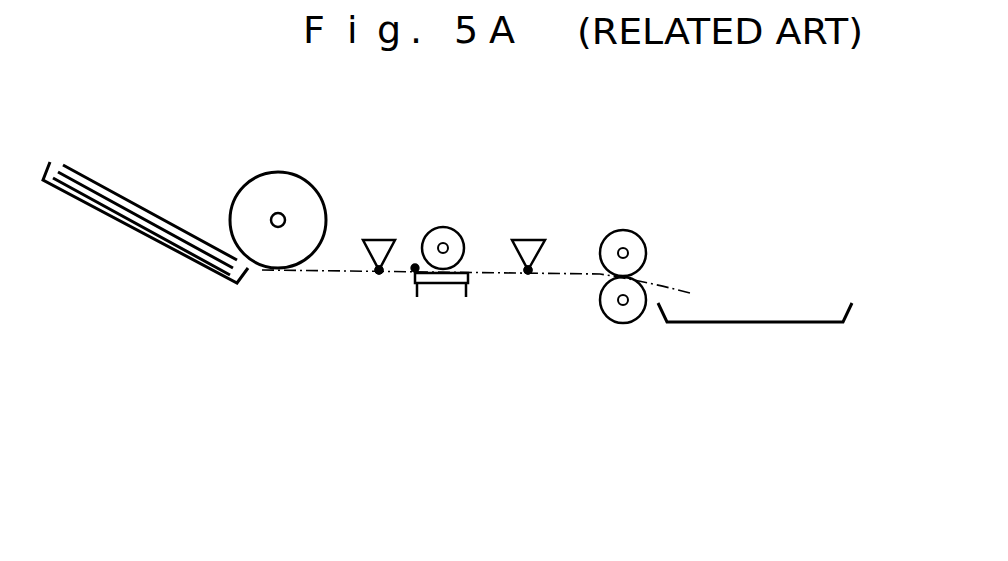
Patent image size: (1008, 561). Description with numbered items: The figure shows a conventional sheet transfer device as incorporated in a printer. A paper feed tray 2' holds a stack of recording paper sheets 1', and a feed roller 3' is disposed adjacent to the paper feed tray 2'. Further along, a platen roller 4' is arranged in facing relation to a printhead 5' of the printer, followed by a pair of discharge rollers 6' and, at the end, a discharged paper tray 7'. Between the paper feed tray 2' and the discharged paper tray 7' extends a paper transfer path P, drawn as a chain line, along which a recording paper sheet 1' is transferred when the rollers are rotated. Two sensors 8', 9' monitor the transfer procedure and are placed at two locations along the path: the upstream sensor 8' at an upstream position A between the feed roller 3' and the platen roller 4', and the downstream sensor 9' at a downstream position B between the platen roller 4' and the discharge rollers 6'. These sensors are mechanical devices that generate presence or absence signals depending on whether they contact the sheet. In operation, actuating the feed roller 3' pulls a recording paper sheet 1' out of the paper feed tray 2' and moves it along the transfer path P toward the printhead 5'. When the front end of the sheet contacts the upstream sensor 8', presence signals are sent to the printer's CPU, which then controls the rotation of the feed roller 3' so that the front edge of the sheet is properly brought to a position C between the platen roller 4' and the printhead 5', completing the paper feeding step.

The recording paper sheets 1' is at (145, 195).
The paper feed tray 2' is at (145, 222).
The feed roller 3' is at (278, 193).
The platen roller 4' is at (454, 220).
The printhead 5' is at (442, 311).
The discharge rollers 6' is at (633, 251).
The discharged paper tray 7' is at (755, 345).
The upstream sensor 8' is at (384, 226).
The downstream sensor 9' is at (539, 224).
The paper transfer path P is at (320, 272).
The upstream position A is at (375, 273).
The downstream position B is at (528, 273).
The position between platen roller and printhead C is at (412, 273).